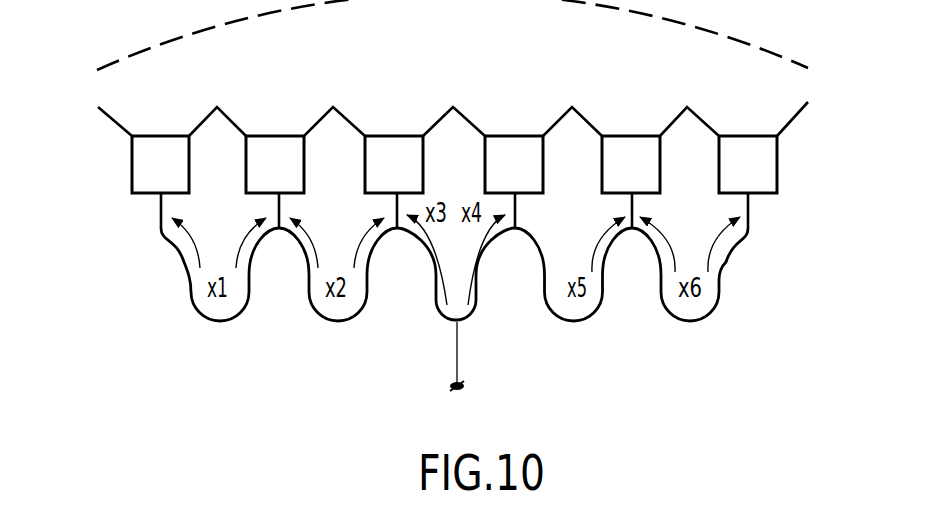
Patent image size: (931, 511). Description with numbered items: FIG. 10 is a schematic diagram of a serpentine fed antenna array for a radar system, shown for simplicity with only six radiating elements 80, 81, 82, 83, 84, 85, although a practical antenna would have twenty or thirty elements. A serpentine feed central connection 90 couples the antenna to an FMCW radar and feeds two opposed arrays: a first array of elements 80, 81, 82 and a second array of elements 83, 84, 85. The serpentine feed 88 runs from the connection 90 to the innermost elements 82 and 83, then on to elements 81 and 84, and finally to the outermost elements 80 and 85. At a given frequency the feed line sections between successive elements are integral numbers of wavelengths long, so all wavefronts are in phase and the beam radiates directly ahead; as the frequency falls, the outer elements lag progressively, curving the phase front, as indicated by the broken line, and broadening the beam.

The radiating element 80 is at (117, 122).
The radiating element 81 is at (229, 118).
The radiating element 82 is at (347, 118).
The radiating element 83 is at (462, 118).
The radiating element 84 is at (581, 118).
The radiating element 85 is at (697, 116).
The winding 88 is at (242, 310).
The serpentine feed central connection 90 is at (465, 386).